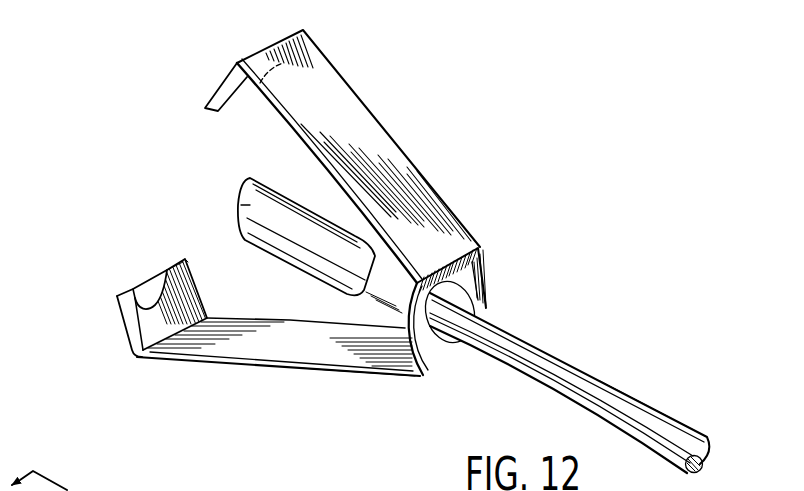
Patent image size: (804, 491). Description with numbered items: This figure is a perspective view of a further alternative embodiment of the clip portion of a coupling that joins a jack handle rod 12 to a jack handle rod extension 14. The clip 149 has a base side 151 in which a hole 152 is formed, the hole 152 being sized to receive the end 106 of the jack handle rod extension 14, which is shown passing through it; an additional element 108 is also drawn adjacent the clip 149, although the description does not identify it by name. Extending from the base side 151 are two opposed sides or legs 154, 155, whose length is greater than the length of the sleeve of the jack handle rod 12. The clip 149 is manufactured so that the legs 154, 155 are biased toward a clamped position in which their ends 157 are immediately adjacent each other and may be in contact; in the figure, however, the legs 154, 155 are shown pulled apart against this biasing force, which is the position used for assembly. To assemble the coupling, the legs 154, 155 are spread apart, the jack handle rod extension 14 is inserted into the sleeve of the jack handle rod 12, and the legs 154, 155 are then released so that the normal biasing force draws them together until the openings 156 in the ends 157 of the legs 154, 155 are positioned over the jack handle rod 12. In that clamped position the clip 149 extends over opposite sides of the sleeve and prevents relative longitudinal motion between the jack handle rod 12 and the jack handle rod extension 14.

The jack handle rod 12 is at (82, 489).
The jack handle rod extension 14 is at (656, 394).
The end of the jack handle rod extension 106 is at (477, 323).
The insert plate 108 is at (240, 208).
The clip 149 is at (323, 378).
The base side 151 is at (427, 354).
The hole 152 is at (480, 266).
The leg 154 is at (241, 368).
The leg 155 is at (378, 129).
The opening 156 is at (241, 96).
The end 157 is at (181, 148).